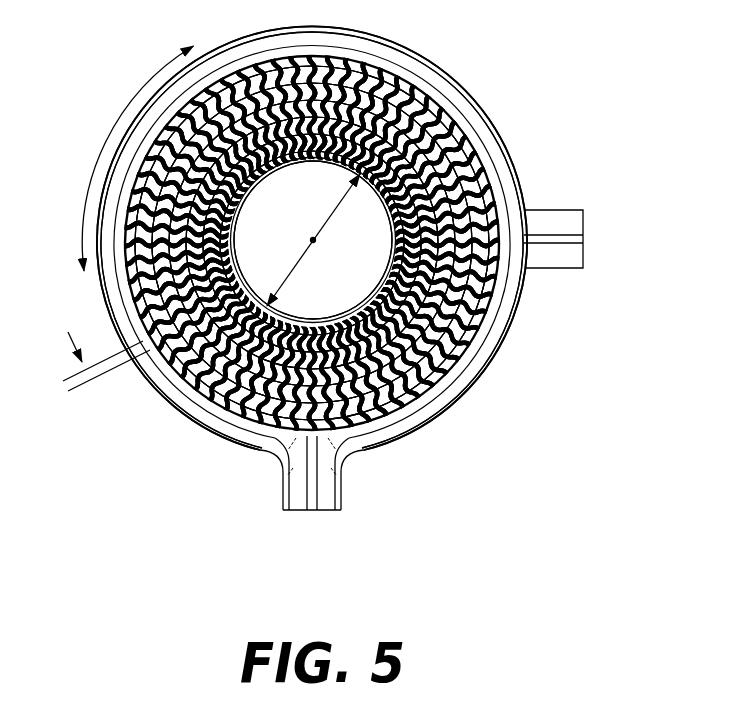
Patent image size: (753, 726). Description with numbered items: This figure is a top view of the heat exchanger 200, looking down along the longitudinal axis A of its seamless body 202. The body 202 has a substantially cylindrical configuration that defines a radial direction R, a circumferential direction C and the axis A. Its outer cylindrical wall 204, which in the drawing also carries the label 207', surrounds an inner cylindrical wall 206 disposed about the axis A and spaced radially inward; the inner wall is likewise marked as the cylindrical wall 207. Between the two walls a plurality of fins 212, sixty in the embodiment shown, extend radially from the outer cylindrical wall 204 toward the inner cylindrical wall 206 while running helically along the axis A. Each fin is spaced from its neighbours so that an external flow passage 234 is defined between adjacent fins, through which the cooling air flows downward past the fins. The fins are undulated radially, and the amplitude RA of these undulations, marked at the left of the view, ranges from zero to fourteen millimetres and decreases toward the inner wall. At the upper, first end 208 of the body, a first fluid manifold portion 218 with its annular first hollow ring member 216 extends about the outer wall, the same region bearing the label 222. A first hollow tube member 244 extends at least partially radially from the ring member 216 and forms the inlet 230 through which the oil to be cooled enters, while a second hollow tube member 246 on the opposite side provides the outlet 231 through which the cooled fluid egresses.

The heat exchanger 200 is at (480, 56).
The seamless body 202 is at (312, 238).
The outer cylindrical wall 204 is at (412, 428).
The outer edge 207' is at (312, 240).
The inner cylindrical wall 206 is at (314, 322).
The first cylindrical wall 207 is at (313, 240).
The first end 208 is at (252, 444).
The fins 212 is at (497, 157).
The first hollow ring member 216 is at (500, 338).
The first fluid manifold portion 218 is at (312, 243).
The knit pattern 222 is at (312, 243).
The inlet 230 is at (340, 511).
The outlet 231 is at (584, 240).
The external flow passage 234 is at (489, 357).
The first hollow tube member 244 is at (283, 493).
The second hollow tube member 246 is at (572, 212).
The circumferential direction C is at (109, 131).
The radial direction R is at (334, 210).
The longitudinal axis A is at (316, 241).
The amplitude RA is at (102, 380).